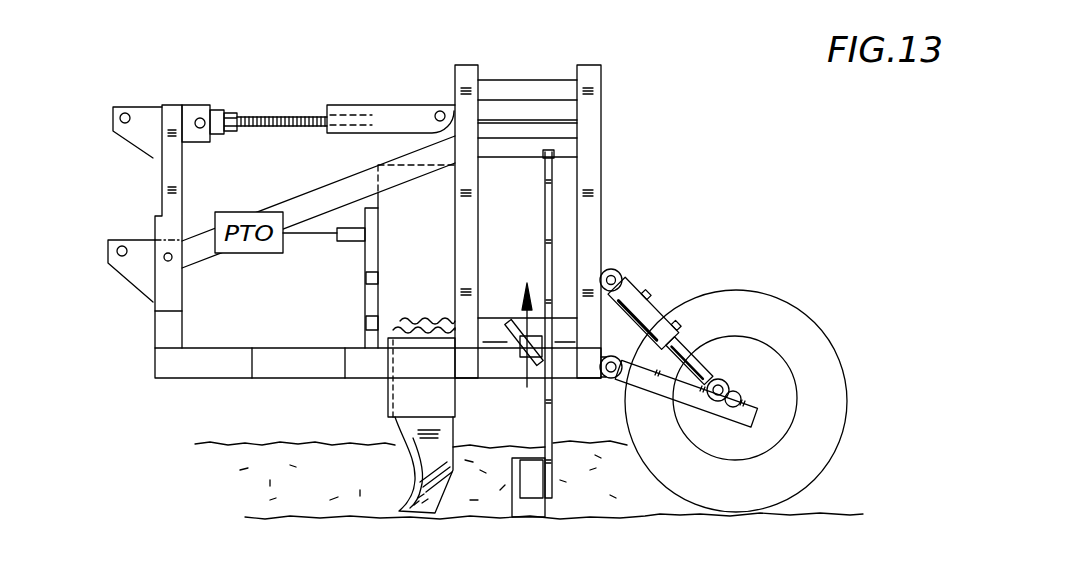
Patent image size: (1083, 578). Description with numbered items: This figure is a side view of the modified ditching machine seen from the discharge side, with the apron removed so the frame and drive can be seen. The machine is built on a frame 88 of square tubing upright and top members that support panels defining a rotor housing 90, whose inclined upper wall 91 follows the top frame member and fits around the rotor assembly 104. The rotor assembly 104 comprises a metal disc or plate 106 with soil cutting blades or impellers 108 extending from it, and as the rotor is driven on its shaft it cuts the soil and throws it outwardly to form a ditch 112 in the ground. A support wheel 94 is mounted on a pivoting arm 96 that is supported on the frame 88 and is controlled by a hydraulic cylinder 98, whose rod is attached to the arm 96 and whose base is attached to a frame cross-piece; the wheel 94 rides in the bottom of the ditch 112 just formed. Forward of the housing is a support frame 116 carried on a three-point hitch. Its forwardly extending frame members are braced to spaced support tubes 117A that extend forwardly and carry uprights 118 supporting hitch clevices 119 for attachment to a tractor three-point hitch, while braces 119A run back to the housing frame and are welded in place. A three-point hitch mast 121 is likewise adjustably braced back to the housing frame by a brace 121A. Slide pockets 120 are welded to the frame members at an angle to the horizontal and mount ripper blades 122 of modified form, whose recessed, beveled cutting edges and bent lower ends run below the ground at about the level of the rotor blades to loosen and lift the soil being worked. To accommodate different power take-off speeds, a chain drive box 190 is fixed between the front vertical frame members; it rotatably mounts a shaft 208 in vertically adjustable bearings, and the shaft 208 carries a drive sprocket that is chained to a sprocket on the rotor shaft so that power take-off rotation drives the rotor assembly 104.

The frame 88 is at (606, 168).
The rotor housing 90 is at (570, 207).
The inclined upper wall 91 is at (522, 80).
The support wheel 94 is at (790, 318).
The pivoting arm 96 is at (696, 405).
The hydraulic cylinder 98 is at (657, 312).
The rotor assembly 104 is at (608, 394).
The metal disc or plate 106 is at (545, 418).
The soil cutting blades or impellers 108 is at (520, 380).
The ditch 112 is at (678, 515).
The support frame 116 is at (333, 357).
The support tubes 117A is at (235, 377).
The uprights 118 is at (173, 329).
The hitch clevices 119 is at (133, 213).
The braces 119A is at (318, 203).
The slide pockets 120 is at (400, 403).
The three-point hitch mast 121 is at (182, 175).
The brace 121A is at (305, 115).
The ripper blades 122 is at (430, 450).
The chain drive box 190 is at (432, 255).
The shaft 208 is at (348, 243).